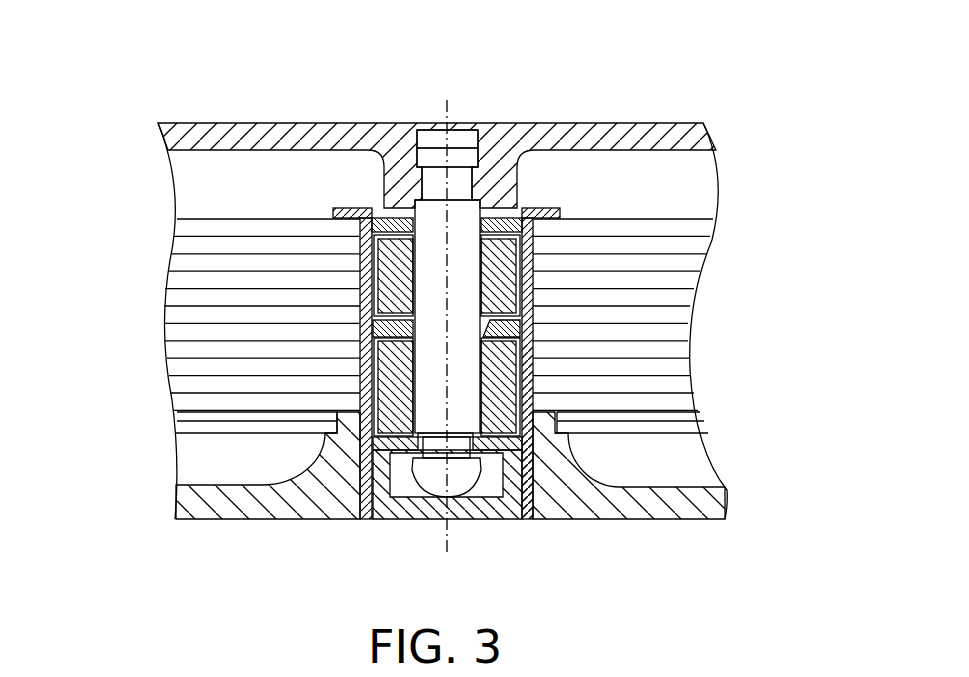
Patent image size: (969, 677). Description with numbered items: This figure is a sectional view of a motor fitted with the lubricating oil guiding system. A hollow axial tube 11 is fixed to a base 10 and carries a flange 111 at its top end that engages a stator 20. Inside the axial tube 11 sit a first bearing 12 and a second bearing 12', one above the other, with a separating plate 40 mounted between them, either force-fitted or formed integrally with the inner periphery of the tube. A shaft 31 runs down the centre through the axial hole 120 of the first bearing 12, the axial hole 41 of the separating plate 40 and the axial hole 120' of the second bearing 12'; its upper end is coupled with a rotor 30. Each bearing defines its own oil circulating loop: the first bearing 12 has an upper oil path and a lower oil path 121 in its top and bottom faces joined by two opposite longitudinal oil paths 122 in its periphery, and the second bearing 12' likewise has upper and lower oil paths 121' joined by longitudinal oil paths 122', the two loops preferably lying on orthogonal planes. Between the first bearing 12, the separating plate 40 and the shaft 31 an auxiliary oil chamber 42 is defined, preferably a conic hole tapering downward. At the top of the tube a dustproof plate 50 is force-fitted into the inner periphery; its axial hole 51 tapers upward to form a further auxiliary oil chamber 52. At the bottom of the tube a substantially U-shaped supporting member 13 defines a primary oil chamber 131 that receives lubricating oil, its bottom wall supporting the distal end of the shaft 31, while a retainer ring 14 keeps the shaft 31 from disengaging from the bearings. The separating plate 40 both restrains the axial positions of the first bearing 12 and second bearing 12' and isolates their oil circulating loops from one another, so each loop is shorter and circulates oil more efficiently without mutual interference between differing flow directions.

The base 10 is at (198, 536).
The axial tube 11 is at (533, 519).
The first bearing 12 is at (583, 368).
The second bearing 12' is at (657, 432).
The supporting member 13 is at (425, 513).
The retainer ring 14 is at (533, 463).
The stator 20 is at (146, 271).
The rotor 30 is at (190, 115).
The shaft 31 is at (457, 219).
The separating plate 40 is at (290, 354).
The axial hole 41 is at (413, 336).
The auxiliary oil chamber 42 is at (488, 320).
The dustproof plate 50 is at (415, 232).
The axial hole 51 is at (419, 165).
The auxiliary oil chamber 52 is at (403, 213).
The flange 111 is at (337, 207).
The axial hole 120 is at (519, 197).
The axial hole 120' is at (397, 468).
The upper and lower oil paths 121 is at (581, 279).
The upper and lower oil paths 121' is at (582, 372).
The longitudinal oil paths 122 is at (658, 231).
The longitudinal oil paths 122' is at (639, 387).
The primary oil chamber 131 is at (492, 513).